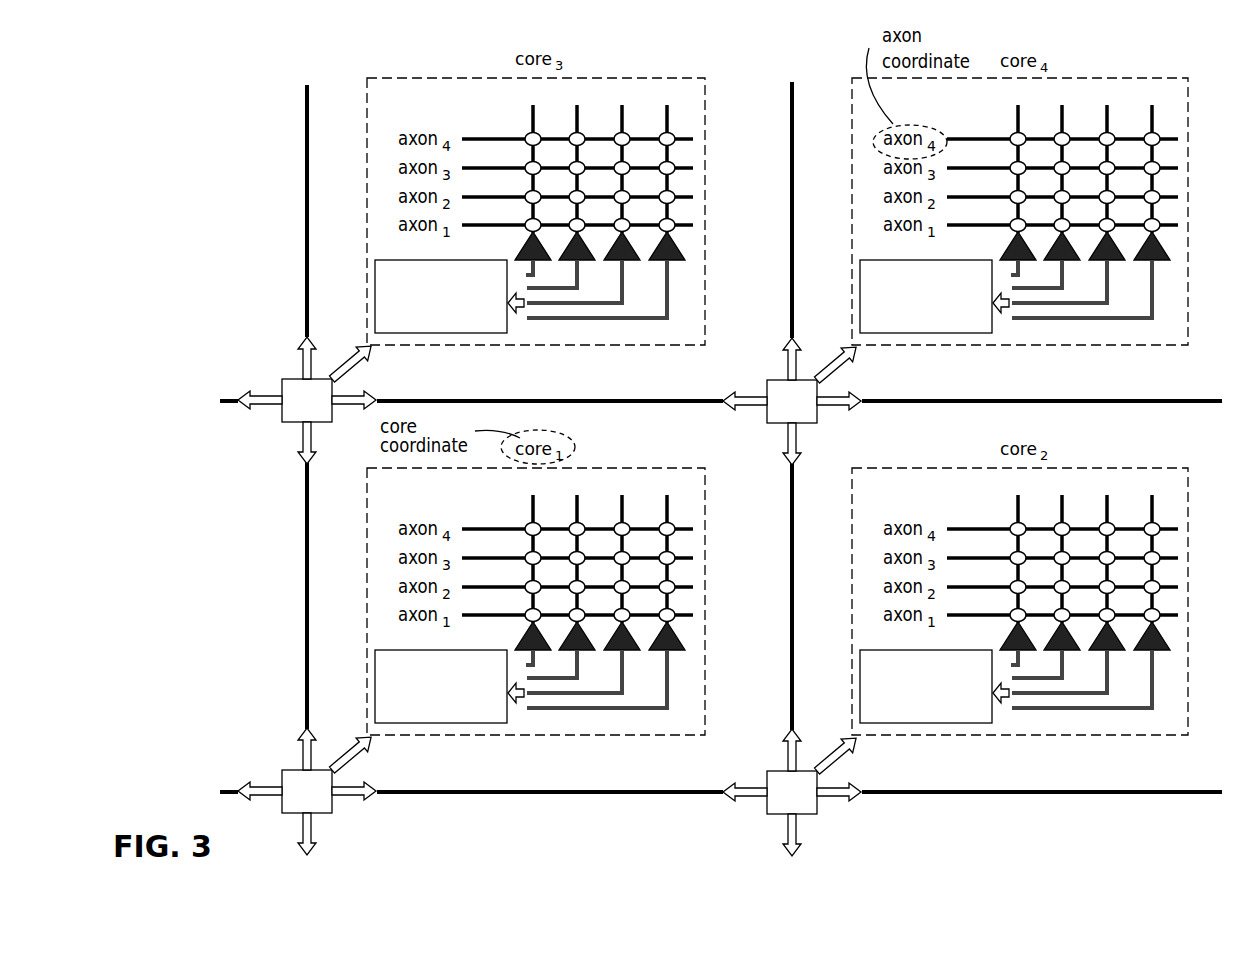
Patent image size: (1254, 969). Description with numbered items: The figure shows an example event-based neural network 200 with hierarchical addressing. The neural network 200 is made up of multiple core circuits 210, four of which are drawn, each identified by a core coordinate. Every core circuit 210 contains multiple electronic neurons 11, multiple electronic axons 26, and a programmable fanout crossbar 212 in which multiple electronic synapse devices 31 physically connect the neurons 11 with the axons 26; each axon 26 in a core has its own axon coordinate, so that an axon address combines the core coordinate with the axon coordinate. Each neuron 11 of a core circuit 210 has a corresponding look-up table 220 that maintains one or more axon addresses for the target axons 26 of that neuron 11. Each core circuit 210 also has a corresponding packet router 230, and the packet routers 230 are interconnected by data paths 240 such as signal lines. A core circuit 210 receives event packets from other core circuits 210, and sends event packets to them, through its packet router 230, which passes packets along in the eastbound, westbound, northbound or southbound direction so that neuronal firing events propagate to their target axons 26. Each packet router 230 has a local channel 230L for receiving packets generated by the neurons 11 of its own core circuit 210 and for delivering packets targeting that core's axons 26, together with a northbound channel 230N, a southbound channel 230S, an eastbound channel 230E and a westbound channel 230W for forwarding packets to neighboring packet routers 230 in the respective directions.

The event-based neural network 200 is at (809, 39).
The core circuit 210 is at (665, 78).
The programmable fanout crossbar 212 is at (512, 121).
The electronic synapse device 31 is at (584, 130).
The electronic axon 26 is at (483, 168).
The electronic neuron 11 is at (681, 255).
The look-up table (LUT) 220 is at (393, 262).
The packet router 230 is at (282, 418).
The northbound channel 230N is at (788, 365).
The westbound channel 230W is at (748, 395).
The local channel 230L is at (843, 365).
The eastbound channel 230E is at (838, 407).
The southbound channel 230S is at (798, 435).
The data path 240 is at (1133, 397).